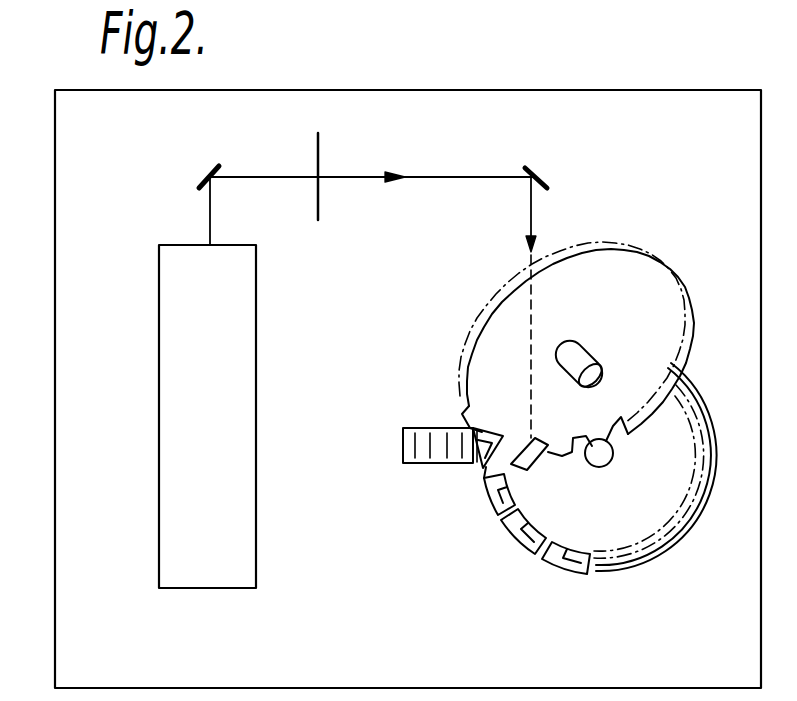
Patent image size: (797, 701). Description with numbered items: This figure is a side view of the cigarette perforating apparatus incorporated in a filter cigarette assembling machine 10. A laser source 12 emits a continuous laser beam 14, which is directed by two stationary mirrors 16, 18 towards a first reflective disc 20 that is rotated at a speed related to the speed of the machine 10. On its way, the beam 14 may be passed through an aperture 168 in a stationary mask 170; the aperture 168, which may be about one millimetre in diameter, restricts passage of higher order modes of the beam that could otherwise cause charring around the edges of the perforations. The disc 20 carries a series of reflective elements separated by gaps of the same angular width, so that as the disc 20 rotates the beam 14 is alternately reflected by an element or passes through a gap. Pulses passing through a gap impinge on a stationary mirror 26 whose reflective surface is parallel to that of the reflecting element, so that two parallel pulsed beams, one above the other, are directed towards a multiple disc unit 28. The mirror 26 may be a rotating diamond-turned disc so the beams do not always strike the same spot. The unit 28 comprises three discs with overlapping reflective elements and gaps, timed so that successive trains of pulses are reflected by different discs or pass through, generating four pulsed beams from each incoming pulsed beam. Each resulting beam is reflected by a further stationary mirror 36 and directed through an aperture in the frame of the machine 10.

The filter cigarette assembling machine 10 is at (57, 208).
The laser source 12 is at (166, 381).
The laser beam 14 is at (213, 218).
The stationary mirror 16 is at (208, 168).
The stationary mirror 18 is at (540, 172).
The first reflective disc 20 is at (662, 288).
The stationary mirror 26 is at (530, 462).
The multiple disc unit 28 is at (628, 580).
The stationary mirror 36 is at (424, 464).
The aperture 168 is at (321, 182).
The stationary mask 170 is at (321, 150).